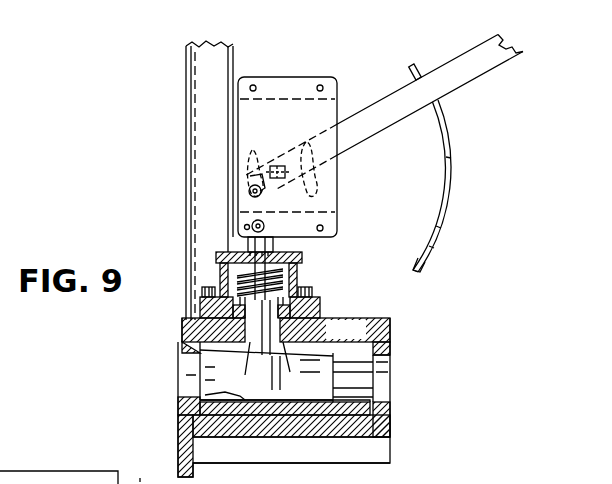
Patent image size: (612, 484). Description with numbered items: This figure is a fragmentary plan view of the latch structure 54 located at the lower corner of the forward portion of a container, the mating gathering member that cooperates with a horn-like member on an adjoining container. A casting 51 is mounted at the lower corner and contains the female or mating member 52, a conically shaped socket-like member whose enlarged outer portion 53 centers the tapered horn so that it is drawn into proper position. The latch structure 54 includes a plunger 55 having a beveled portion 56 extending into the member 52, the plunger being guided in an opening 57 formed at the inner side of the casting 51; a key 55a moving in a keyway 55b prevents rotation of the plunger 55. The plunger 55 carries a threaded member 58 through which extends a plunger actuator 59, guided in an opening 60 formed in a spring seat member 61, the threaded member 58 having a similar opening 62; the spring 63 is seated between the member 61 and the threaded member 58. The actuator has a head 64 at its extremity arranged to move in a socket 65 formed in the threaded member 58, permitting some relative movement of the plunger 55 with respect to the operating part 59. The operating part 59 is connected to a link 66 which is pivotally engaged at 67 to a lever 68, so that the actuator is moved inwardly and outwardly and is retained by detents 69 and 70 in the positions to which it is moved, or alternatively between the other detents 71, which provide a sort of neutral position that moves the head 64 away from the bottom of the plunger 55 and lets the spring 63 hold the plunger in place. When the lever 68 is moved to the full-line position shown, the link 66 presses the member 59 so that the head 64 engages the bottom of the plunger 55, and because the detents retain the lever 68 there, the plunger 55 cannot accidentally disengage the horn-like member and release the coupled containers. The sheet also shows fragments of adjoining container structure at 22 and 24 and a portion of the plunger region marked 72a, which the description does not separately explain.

The cabinet wall 22 is at (141, 471).
The cabinet top 24 is at (1, 471).
The casting 51 is at (348, 430).
The female or mating member 52 is at (343, 402).
The enlarged outer portion 53 is at (205, 396).
The latch structure 54 is at (306, 274).
The plunger 55 is at (266, 376).
The key 55a is at (300, 330).
The keyway 55b is at (342, 330).
The beveled portion 56 is at (225, 384).
The opening 57 is at (310, 368).
The threaded member 58 is at (186, 352).
The plunger actuator 59 is at (221, 258).
The opening 60 is at (250, 244).
The spring seat member 61 is at (303, 260).
The opening 62 is at (236, 356).
The spring 63 is at (213, 286).
The head 64 is at (310, 318).
The socket 65 is at (300, 308).
The link 66 is at (248, 192).
The pivot 67 is at (287, 157).
The lever 68 is at (403, 94).
The detent 69 is at (420, 62).
The detent 70 is at (430, 260).
The detents 71 is at (457, 148).
The valve member 72a is at (295, 374).